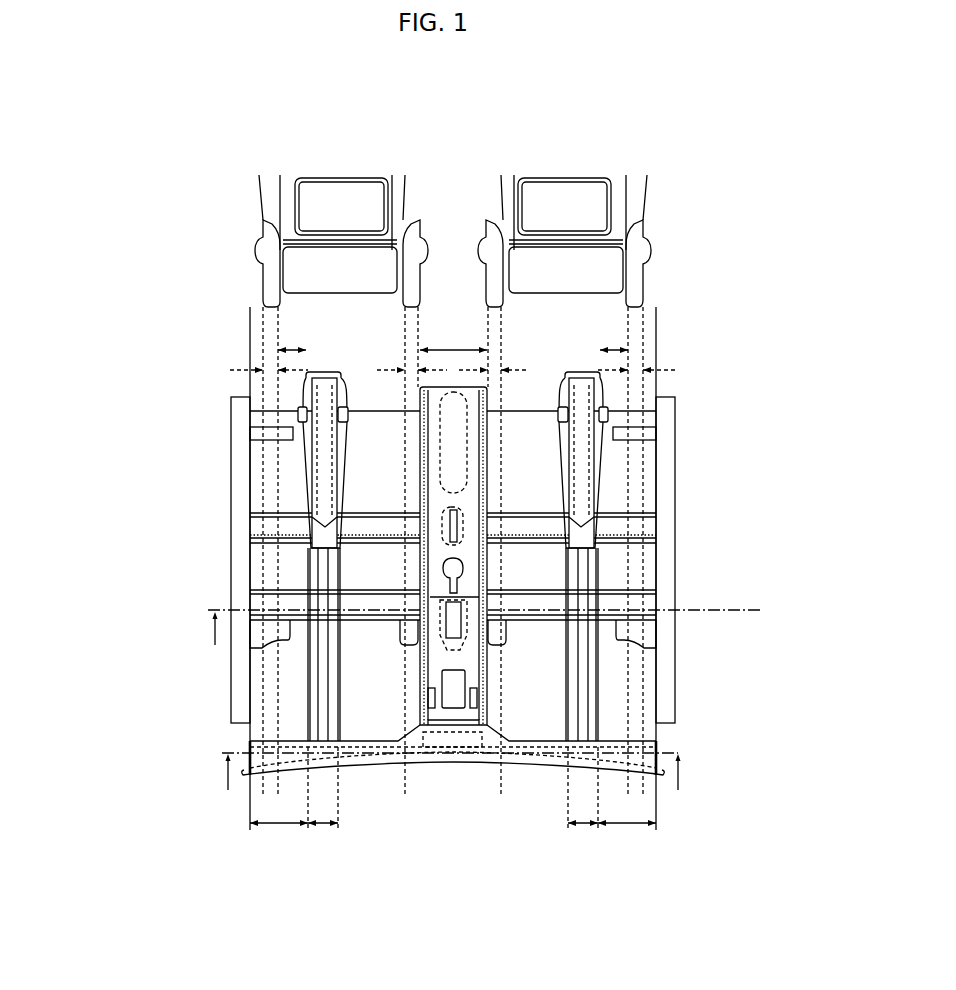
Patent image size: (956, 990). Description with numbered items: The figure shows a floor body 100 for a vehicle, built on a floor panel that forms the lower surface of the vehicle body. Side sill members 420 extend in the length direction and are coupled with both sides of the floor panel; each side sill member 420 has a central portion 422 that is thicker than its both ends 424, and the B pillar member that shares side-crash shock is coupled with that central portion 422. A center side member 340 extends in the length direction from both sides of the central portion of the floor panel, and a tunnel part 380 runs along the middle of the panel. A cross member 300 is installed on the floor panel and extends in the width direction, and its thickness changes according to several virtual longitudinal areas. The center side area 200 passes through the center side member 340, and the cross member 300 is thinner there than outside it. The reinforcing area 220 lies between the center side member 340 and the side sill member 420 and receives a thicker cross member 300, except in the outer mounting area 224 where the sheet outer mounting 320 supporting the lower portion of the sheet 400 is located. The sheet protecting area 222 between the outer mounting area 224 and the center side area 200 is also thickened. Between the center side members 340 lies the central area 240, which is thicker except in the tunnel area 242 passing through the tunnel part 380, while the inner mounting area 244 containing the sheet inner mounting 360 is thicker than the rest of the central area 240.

The floor body 100 is at (165, 374).
The center side area 200 is at (321, 828).
The reinforcing area 220 is at (277, 828).
The sheet protecting area 222 is at (282, 349).
The outer mounting area 224 is at (250, 371).
The central area 240 is at (568, 812).
The tunnel area 242 is at (450, 347).
The inner mounting area 244 is at (416, 372).
The cross member 300 is at (240, 633).
The sheet outer mounting 320 is at (262, 290).
The center side member 340 is at (326, 493).
The sheet inner mounting 360 is at (413, 277).
The tunnel part 380 is at (440, 713).
The sheet 400 is at (484, 180).
The side sill member 420 is at (231, 423).
The central portion of the side sill member 422 is at (254, 526).
The both ends of the side sill member 424 is at (231, 456).